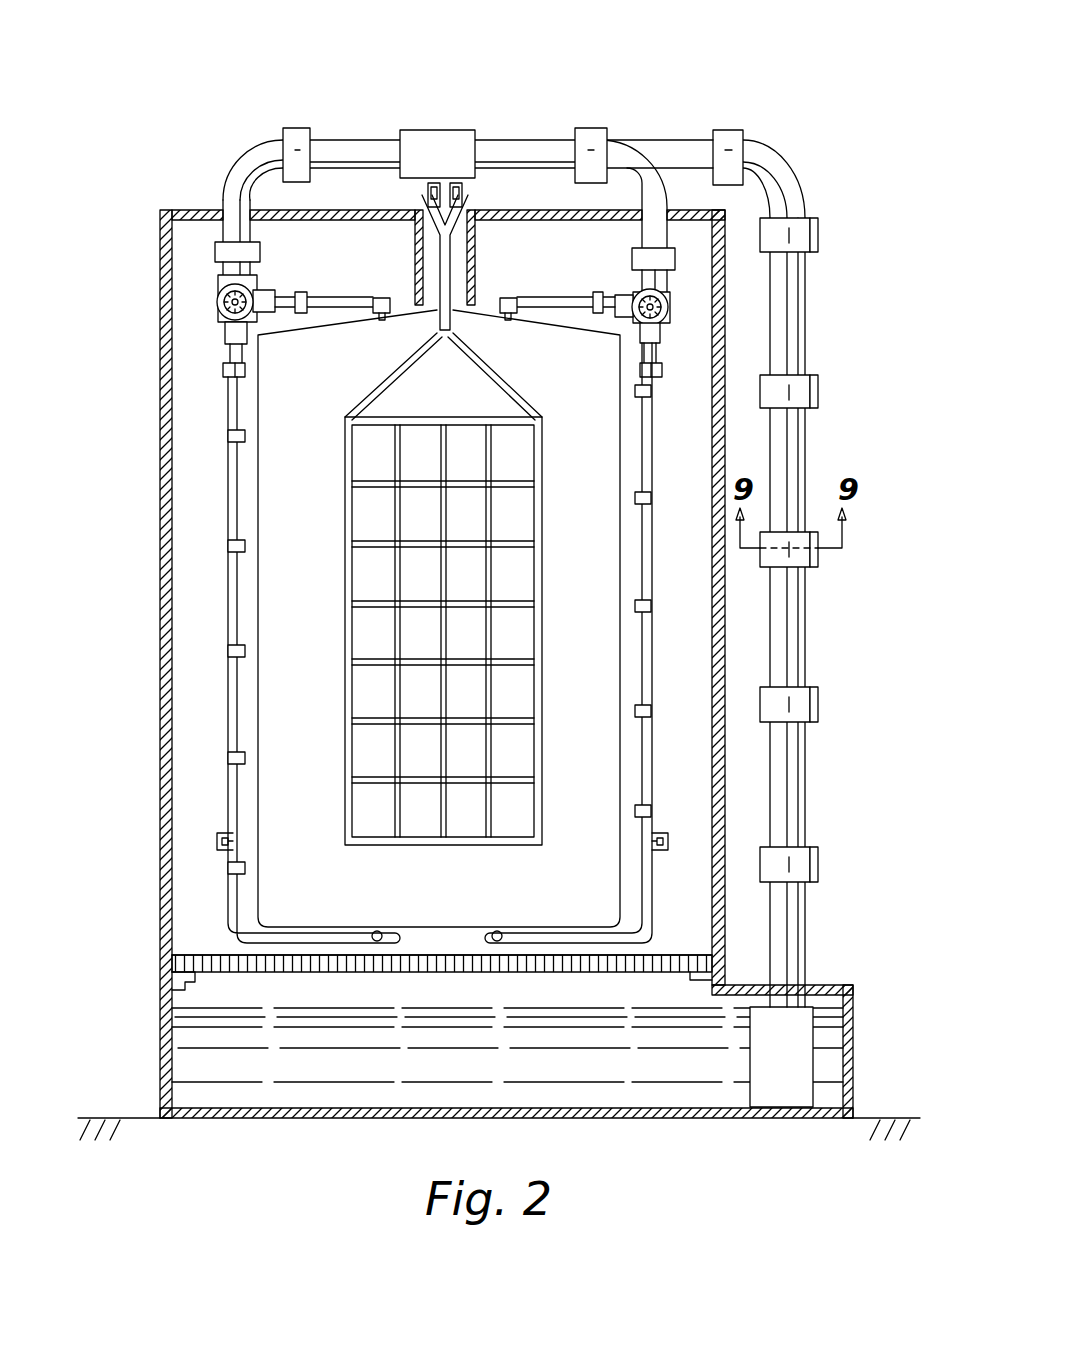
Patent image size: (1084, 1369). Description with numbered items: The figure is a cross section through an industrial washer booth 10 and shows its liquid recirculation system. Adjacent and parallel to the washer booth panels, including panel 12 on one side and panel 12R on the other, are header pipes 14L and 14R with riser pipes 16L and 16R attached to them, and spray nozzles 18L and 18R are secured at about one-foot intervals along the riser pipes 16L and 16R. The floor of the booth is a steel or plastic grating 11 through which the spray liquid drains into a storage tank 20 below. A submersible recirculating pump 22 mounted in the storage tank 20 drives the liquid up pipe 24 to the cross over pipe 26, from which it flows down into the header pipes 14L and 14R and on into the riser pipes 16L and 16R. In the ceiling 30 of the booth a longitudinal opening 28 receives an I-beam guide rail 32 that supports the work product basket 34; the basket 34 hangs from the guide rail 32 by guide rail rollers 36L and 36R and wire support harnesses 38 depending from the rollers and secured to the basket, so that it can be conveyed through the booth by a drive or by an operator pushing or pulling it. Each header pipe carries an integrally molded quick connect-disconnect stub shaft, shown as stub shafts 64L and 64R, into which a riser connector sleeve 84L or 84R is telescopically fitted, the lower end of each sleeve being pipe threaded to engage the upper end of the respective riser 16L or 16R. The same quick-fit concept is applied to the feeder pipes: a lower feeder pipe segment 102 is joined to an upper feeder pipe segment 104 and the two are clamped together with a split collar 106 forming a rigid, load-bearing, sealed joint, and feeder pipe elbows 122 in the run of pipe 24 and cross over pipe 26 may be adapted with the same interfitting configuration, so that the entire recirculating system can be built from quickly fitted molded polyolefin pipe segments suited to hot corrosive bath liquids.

The industrial washer booth 10 is at (188, 148).
The grating 11 is at (447, 948).
The washer booth panel 12 is at (166, 605).
The right washer booth panel 12R is at (725, 772).
The left header pipe 14L is at (217, 302).
The right header pipe 14R is at (665, 318).
The left riser pipe 16L is at (352, 298).
The right riser pipe 16R is at (582, 298).
The left spray nozzles 18L is at (245, 757).
The right spray nozzles 18R is at (641, 708).
The storage tank 20 is at (850, 990).
The submersible recirculating pump 22 is at (810, 1008).
The pipe 24 is at (792, 467).
The cross over pipe 26 is at (345, 150).
The longitudinal opening 28 is at (462, 282).
The ceiling 30 is at (560, 210).
The I-beam guide rail 32 is at (452, 178).
The work product basket 34 is at (541, 630).
The left guide rail roller 36L is at (428, 196).
The right guide rail roller 36R is at (462, 196).
The wire support harnesses 38 is at (437, 318).
The left stub shaft 64L is at (228, 323).
The right stub shaft 64R is at (620, 292).
The left riser connector sleeve 84L is at (226, 370).
The right riser connector sleeve 84R is at (612, 295).
The lower feeder pipe segment 102 is at (806, 650).
The upper feeder pipe segment 104 is at (807, 478).
The split collar 106 is at (812, 568).
The feeder pipe elbows 122 is at (247, 140).